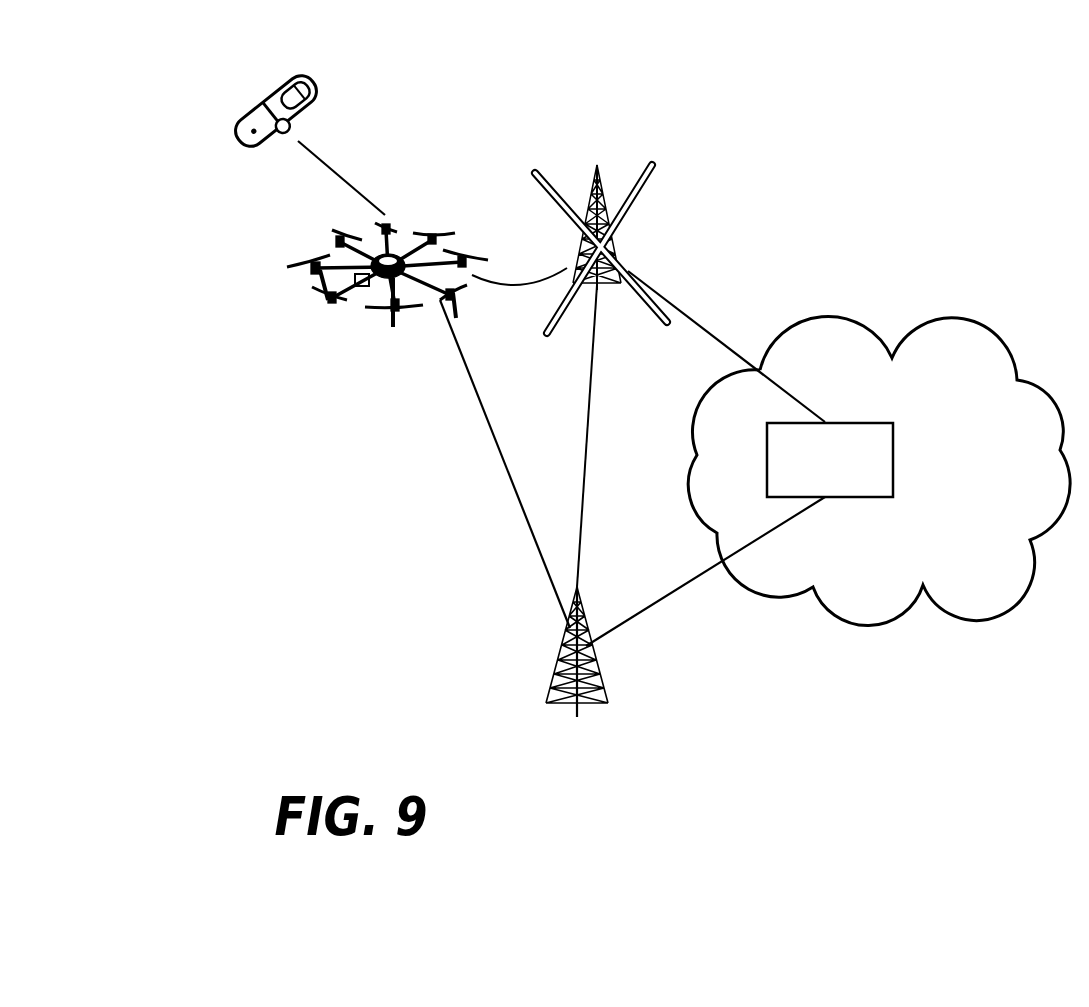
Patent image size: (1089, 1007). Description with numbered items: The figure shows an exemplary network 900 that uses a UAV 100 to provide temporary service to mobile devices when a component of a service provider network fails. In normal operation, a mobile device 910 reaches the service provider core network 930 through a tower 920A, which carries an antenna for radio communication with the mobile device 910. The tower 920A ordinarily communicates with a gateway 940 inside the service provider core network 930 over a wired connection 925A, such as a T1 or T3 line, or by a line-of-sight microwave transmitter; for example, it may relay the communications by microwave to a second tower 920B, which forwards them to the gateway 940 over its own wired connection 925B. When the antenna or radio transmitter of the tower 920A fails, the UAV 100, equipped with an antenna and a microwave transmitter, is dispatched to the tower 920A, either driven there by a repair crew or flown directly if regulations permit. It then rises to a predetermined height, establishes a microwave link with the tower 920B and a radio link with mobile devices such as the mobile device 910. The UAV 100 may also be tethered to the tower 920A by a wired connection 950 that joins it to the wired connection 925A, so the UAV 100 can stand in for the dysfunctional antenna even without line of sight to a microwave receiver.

The network 900 is at (612, 45).
The mobile device 910 is at (268, 96).
The UAV 100 is at (323, 240).
The wired connection 950 is at (531, 264).
The tower 920A is at (595, 172).
The tower 920B is at (553, 683).
The wired connection 925A is at (698, 324).
The wired connection 925B is at (707, 578).
The service provider core network 930 is at (893, 612).
The gateway 940 is at (767, 463).